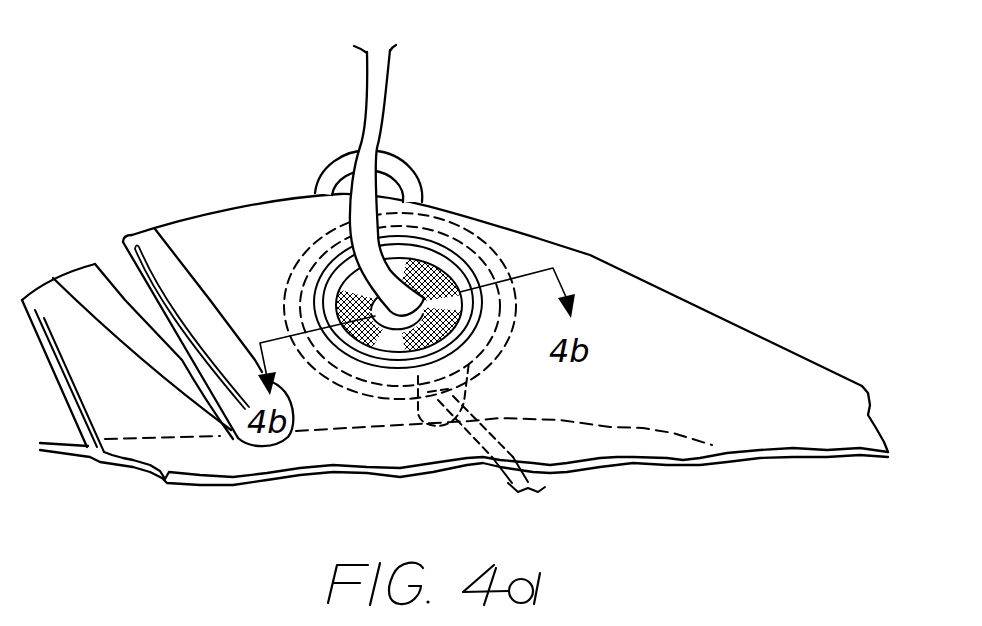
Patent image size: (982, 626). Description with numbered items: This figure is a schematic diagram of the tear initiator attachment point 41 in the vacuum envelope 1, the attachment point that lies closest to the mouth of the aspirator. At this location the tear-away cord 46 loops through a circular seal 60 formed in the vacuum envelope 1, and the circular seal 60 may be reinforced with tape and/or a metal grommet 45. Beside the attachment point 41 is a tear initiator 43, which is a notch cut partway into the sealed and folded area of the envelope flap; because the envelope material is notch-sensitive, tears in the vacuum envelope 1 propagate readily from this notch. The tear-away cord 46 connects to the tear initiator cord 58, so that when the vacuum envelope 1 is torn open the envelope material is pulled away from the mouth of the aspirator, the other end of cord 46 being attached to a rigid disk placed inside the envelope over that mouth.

The vacuum envelope 1 is at (220, 250).
The tear initiator attachment point 41 is at (405, 298).
The tear initiator 43 is at (88, 262).
The metal grommet 45 is at (352, 290).
The tear-away cord 46 is at (343, 375).
The tear initiator cord 58 is at (377, 95).
The circular seal 60 is at (323, 287).